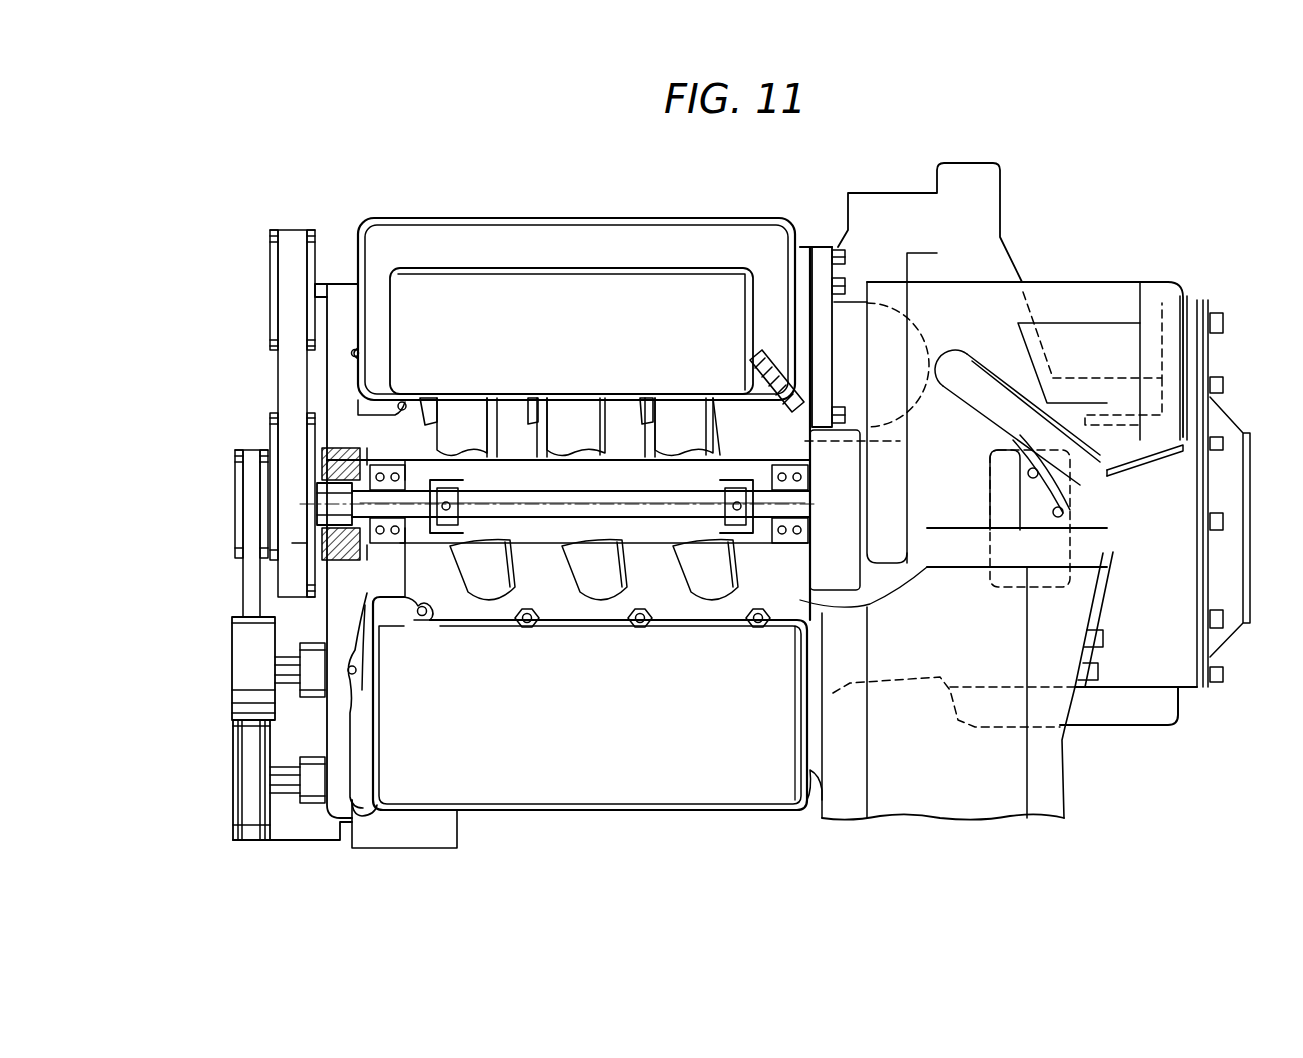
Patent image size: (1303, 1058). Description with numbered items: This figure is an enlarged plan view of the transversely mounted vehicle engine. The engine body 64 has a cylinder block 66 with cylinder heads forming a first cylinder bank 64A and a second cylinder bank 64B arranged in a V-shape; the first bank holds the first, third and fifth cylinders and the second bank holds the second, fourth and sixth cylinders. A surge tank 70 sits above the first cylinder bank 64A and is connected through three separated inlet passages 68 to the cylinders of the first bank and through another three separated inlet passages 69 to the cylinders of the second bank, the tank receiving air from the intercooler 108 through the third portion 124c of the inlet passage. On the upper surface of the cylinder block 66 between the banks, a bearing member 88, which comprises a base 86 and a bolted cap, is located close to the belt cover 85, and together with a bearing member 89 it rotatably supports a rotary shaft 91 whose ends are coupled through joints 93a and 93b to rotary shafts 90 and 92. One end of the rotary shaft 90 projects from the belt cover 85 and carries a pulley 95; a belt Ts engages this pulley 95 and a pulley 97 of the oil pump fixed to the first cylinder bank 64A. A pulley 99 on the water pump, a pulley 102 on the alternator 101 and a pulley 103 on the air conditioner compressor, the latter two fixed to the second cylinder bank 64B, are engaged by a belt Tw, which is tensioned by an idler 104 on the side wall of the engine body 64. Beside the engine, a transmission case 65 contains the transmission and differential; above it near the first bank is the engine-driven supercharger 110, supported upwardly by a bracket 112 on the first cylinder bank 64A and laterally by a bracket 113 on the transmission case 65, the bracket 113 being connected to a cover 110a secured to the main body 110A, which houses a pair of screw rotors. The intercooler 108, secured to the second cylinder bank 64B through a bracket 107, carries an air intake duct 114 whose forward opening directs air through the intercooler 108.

The engine body 64 is at (356, 212).
The first cylinder bank 64A is at (427, 230).
The surge tank 70 is at (540, 290).
The pulley 97 is at (270, 262).
The belt Ts is at (290, 370).
The pulley 95 is at (272, 420).
The pulley 99 is at (240, 462).
The belt Tw is at (245, 580).
The idler 104 is at (240, 665).
The pulley 102 is at (236, 778).
The pulley 103 is at (236, 828).
The belt cover 85 is at (365, 815).
The alternator 101 is at (442, 836).
The second cylinder bank 64B is at (518, 800).
The bearing member 88 is at (385, 545).
The base 86 is at (408, 560).
The rotary shaft 90 is at (418, 500).
The rotary shaft 91 is at (580, 510).
The rotary shaft 92 is at (785, 545).
The bearing member 89 is at (790, 625).
The joint 93a is at (450, 488).
The joint 93b is at (735, 488).
The separated inlet passages 68 is at (428, 412).
The separated inlet passages 69 is at (437, 443).
The third portion of the inlet passage 124c is at (758, 398).
The bracket 112 is at (852, 278).
The engine-driven supercharger 110 is at (1100, 275).
The main body 110A is at (1056, 297).
The cover 110a is at (1155, 293).
The bracket 113 is at (1150, 472).
The cylinder block 66 is at (868, 624).
The transmission case 65 is at (1180, 692).
The intercooler 108 is at (1068, 788).
The air intake duct 114 is at (950, 812).
The bracket 107 is at (810, 805).